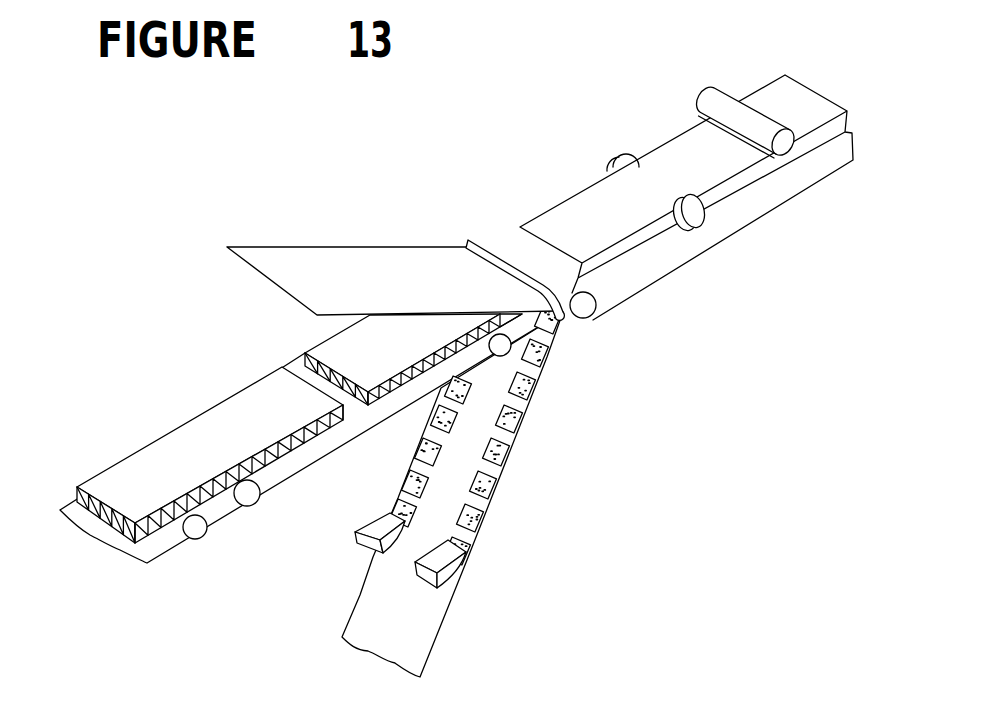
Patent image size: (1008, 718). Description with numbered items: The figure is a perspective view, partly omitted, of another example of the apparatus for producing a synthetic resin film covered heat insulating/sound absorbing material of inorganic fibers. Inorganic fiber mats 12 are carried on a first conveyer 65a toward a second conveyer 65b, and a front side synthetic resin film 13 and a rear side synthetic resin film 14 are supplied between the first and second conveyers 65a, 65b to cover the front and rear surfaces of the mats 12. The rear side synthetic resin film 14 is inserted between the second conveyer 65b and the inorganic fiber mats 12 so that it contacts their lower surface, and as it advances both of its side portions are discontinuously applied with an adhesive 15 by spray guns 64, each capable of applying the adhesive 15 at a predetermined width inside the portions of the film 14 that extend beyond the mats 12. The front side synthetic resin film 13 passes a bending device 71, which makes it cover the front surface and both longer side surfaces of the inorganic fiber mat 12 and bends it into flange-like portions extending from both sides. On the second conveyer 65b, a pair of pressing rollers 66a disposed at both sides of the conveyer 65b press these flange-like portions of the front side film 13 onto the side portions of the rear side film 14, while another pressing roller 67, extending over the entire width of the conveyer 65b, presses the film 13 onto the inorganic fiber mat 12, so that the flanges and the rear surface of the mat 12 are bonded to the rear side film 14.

The inorganic fiber mats 12 is at (210, 437).
The front side synthetic resin film 13 is at (335, 268).
The rear side synthetic resin film 14 is at (413, 625).
The adhesive 15 is at (493, 492).
The spray guns 64 is at (372, 525).
The first conveyer 65a is at (267, 483).
The second conveyer 65b is at (670, 257).
The pressing rollers 66a is at (617, 157).
The pressing roller 67 is at (712, 102).
The bending device 71 is at (513, 250).